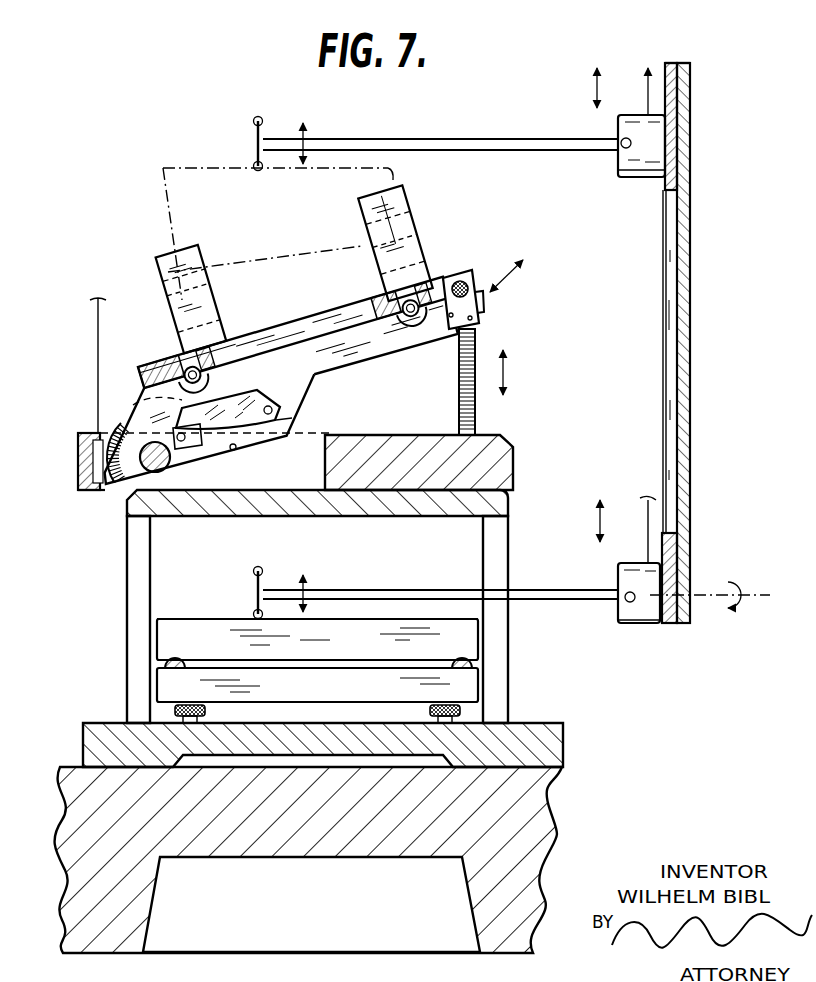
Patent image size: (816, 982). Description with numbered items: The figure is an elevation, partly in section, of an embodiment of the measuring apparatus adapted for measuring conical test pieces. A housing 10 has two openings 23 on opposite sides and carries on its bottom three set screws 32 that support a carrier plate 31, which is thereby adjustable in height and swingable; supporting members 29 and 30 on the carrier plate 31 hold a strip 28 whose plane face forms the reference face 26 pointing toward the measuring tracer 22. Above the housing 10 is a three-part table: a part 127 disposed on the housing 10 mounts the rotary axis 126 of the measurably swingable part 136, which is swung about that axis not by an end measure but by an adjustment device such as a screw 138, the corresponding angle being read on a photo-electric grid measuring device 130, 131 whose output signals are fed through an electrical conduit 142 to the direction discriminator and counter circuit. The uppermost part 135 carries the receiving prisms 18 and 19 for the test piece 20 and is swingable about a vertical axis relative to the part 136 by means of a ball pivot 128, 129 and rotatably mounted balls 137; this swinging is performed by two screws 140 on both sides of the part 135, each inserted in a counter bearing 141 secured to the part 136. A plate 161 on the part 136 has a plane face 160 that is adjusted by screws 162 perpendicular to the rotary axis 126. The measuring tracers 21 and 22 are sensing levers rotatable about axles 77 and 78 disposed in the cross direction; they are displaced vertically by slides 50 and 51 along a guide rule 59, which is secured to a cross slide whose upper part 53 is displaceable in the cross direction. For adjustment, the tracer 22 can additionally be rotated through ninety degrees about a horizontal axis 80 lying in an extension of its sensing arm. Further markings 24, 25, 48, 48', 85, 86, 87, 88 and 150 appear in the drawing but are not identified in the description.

The housing 10 is at (510, 517).
The receiving prism 18 is at (162, 253).
The receiving prism 19 is at (414, 234).
The test piece 20 is at (393, 190).
The measuring tracer 21 is at (483, 135).
The measuring tracer 22 is at (578, 586).
The openings 23 is at (135, 564).
The marking on first post 24 is at (168, 290).
The marking on second post 25 is at (418, 246).
The reference face 26 is at (181, 616).
The strip 28 is at (222, 628).
The supporting member 29 is at (168, 663).
The supporting member 30 is at (468, 664).
The carrier plate 31 is at (470, 682).
The set screws 32 is at (198, 705).
The pivot axis 48 is at (265, 243).
The displaced pivot axis 48' is at (275, 220).
The slide 50 is at (668, 185).
The slide 51 is at (690, 542).
The upper part 53 is at (683, 64).
The guide rule 59 is at (668, 62).
The axle 77 is at (622, 141).
The axle 78 is at (628, 602).
The horizontal axis 80 is at (676, 590).
The upper slide lower part 85 is at (620, 165).
The lower slide bottom 86 is at (655, 625).
The upper vertical adjustment 87 is at (648, 100).
The lower vertical adjustment 88 is at (648, 535).
The rotary axis 126 is at (164, 472).
The part 127 is at (78, 455).
The ball pivot 128 is at (238, 346).
The ball pivot 129 is at (185, 368).
The measuring device 130 is at (122, 428).
The measuring device 131 is at (100, 494).
The uppermost part 135 is at (320, 325).
The measurably swingable part 136 is at (352, 354).
The rotatably mounted balls 137 is at (405, 322).
The screw 138 is at (460, 405).
The screws 140 is at (465, 284).
The counter bearing 141 is at (484, 306).
The electrical conduit 142 is at (97, 350).
The foundation 150 is at (557, 795).
The plane face 160 is at (240, 462).
The plate 161 is at (238, 394).
The screws 162 is at (283, 419).